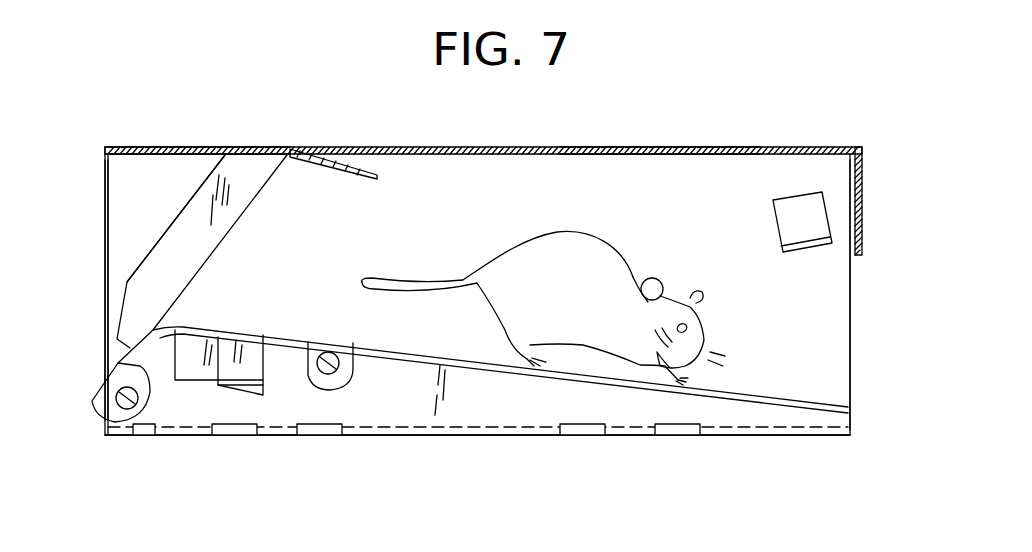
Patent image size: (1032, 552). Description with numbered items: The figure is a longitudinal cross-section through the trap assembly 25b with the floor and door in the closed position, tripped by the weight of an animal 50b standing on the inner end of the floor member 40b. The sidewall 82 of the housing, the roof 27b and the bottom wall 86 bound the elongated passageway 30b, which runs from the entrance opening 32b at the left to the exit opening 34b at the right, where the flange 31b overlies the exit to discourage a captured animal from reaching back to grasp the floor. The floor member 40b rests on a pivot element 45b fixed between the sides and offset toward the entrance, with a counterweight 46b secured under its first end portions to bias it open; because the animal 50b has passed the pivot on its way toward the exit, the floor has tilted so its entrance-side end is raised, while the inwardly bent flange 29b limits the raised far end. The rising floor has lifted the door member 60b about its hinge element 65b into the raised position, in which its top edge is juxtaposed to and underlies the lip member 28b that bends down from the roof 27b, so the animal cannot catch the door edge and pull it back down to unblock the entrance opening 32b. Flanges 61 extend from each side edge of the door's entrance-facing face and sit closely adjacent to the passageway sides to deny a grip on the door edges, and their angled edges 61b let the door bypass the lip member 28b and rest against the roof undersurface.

The flanges 61 is at (183, 218).
The trap assembly 25b is at (222, 137).
The edges of the flanges 61b is at (263, 148).
The lip member 28b is at (348, 157).
The sidewall 82 is at (658, 167).
The roof 27b is at (755, 145).
The flange 31b is at (862, 197).
The entrance opening 32b is at (137, 223).
The door member 60b is at (195, 250).
The passageway 30b is at (490, 209).
The animal 50b is at (598, 260).
The inwardly bent flange 29b is at (802, 257).
The floor member 40b is at (774, 386).
The exit opening 34b is at (823, 328).
The counterweight 46b is at (193, 370).
The pivot element 45b is at (340, 372).
The hinge element 65b is at (135, 405).
The bottom wall 86 is at (733, 428).